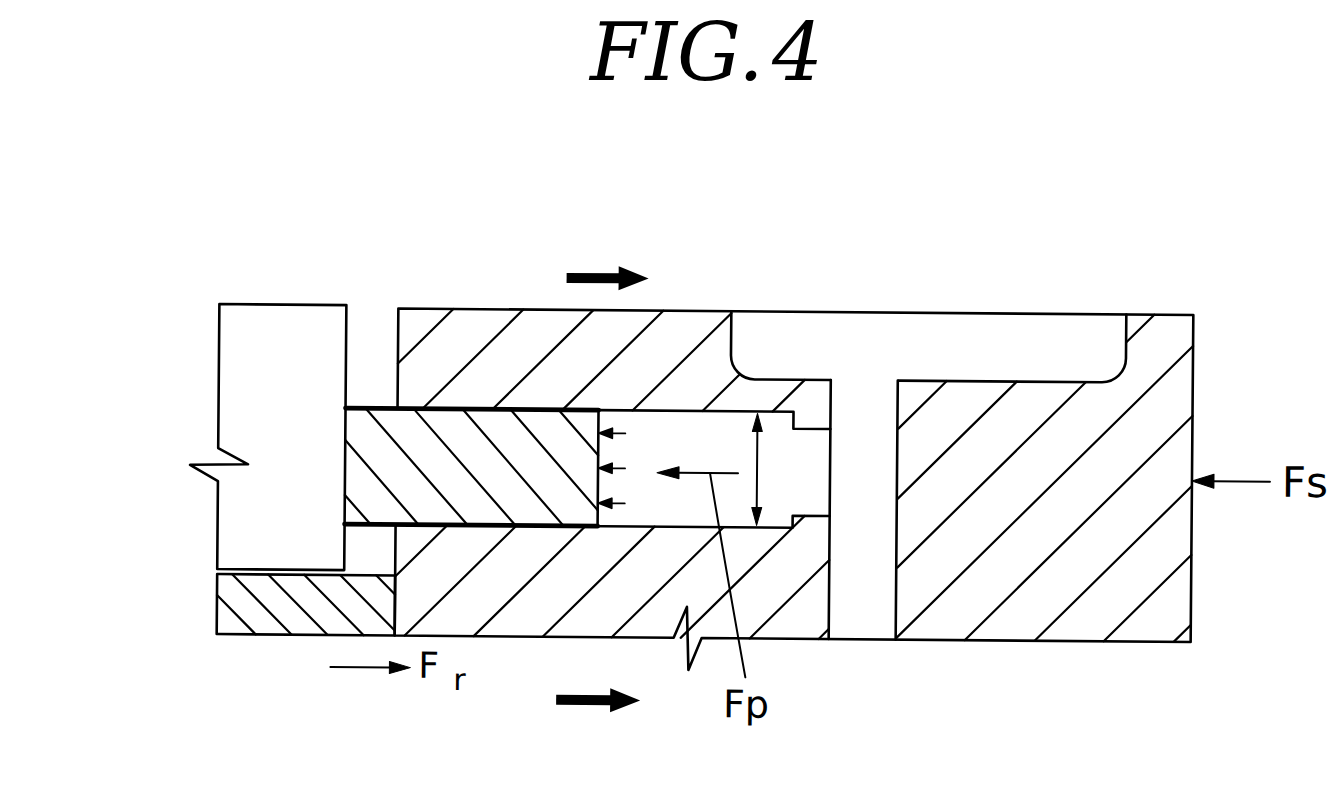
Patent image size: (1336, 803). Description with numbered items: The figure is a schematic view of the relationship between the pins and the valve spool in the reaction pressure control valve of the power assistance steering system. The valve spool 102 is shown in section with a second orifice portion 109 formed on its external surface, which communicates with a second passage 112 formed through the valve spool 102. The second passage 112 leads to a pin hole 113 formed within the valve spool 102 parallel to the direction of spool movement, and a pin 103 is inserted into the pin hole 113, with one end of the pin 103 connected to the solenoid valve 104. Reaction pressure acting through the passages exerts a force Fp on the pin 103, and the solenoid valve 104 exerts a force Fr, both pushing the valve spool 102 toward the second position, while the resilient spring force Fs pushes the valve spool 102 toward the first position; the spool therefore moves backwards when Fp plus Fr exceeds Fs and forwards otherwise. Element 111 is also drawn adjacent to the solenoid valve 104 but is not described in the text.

The valve spool 102 is at (1157, 339).
The pin 103 is at (433, 457).
The solenoid valve 104 is at (275, 336).
The second orifice portion 109 is at (867, 365).
The retaining member 111 is at (265, 621).
The second passage 112 is at (858, 599).
The pin hole 113 is at (677, 443).